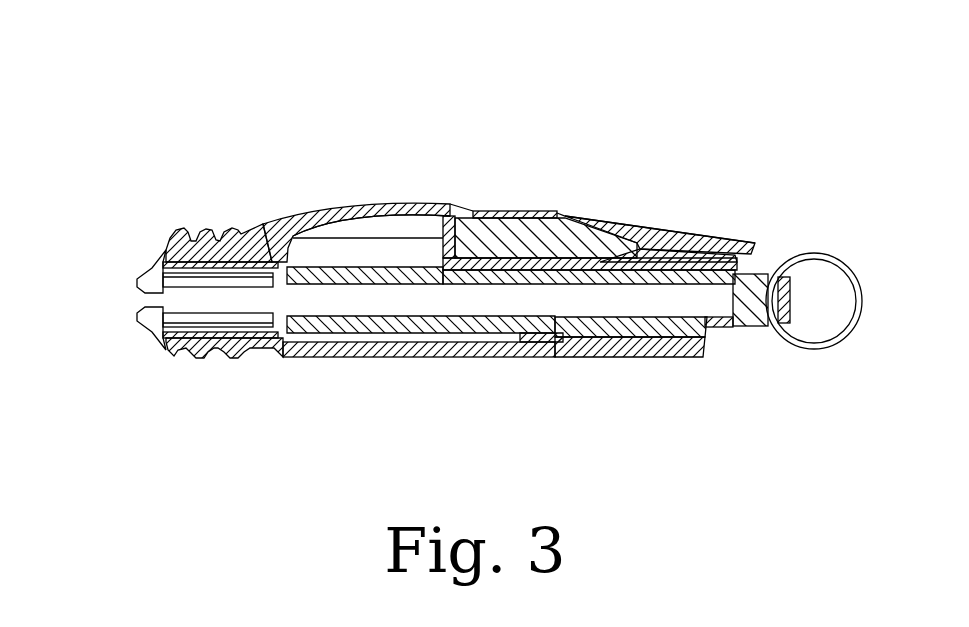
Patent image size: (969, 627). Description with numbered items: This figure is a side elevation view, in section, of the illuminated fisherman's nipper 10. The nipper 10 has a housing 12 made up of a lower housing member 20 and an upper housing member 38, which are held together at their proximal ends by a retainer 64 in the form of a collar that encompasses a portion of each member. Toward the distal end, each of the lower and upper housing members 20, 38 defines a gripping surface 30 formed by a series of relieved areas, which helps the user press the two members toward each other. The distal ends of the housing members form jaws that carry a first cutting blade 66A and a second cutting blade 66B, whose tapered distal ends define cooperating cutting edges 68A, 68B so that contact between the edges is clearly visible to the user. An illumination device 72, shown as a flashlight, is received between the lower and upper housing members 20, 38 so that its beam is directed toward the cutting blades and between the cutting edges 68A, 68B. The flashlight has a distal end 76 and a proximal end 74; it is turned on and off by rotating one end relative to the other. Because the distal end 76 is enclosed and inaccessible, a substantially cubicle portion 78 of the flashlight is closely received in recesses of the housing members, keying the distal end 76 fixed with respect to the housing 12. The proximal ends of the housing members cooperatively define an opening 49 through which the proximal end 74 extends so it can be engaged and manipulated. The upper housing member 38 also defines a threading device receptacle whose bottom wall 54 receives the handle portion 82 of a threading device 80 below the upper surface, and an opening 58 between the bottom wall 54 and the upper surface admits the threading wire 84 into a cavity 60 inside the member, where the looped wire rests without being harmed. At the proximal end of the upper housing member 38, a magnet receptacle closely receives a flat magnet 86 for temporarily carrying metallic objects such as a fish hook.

The nipper 10 is at (175, 90).
The housing 12 is at (621, 213).
The lower housing member 20 is at (423, 364).
The gripping surface 30 is at (220, 226).
The upper housing member 38 is at (293, 220).
The opening 49 is at (717, 323).
The bottom wall 54 is at (483, 284).
The opening 58 is at (471, 262).
The cavity 60 is at (405, 232).
The retainer 64 is at (682, 226).
The first cutting blade 66A is at (147, 327).
The second cutting blade 66B is at (152, 267).
The cutting edge 68A is at (135, 307).
The cutting edge 68B is at (133, 293).
The illumination device 72 is at (461, 336).
The proximal end 74 is at (770, 345).
The distal end 76 is at (330, 267).
The cubicle portion 78 is at (587, 357).
The threading device 80 is at (578, 210).
The handle portion 82 is at (628, 224).
The threading wire 84 is at (383, 225).
The magnet 86 is at (733, 247).